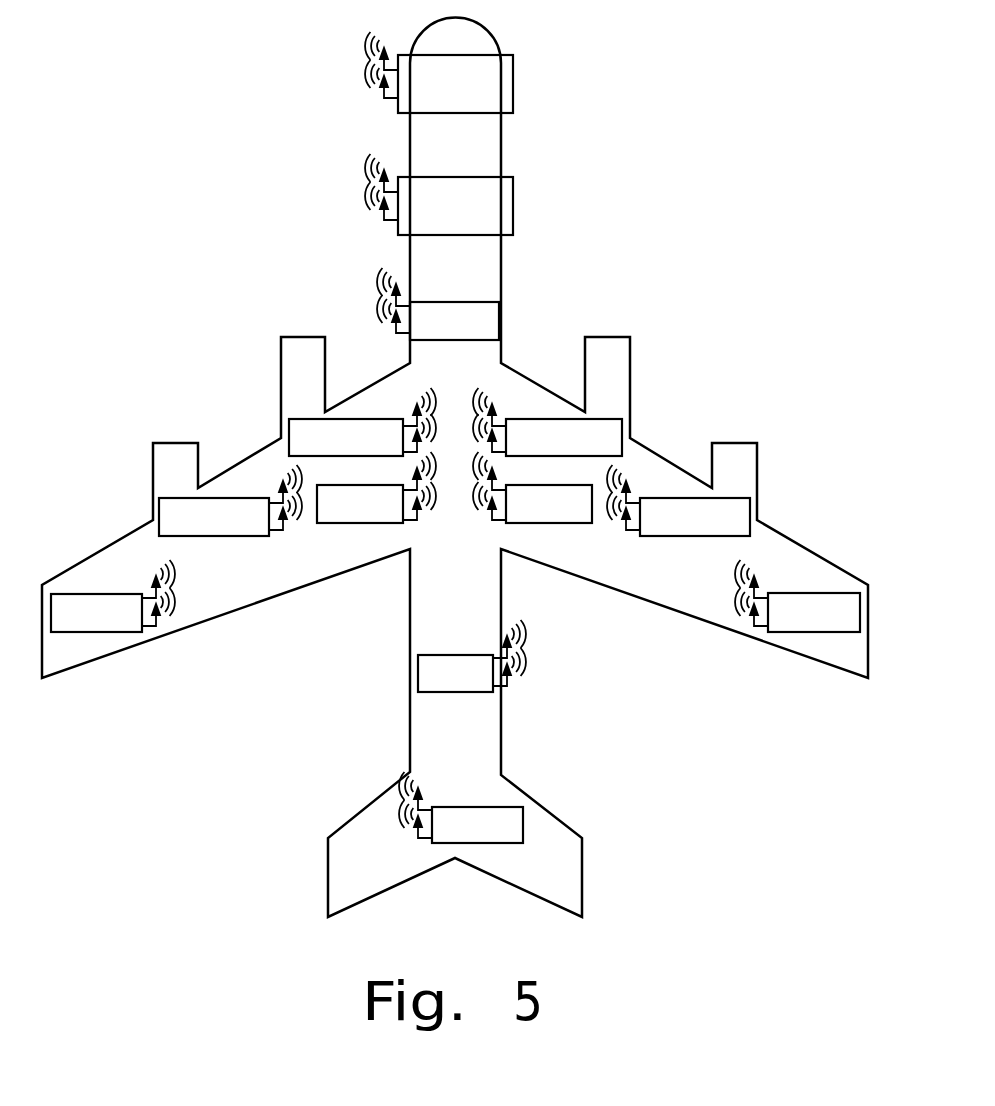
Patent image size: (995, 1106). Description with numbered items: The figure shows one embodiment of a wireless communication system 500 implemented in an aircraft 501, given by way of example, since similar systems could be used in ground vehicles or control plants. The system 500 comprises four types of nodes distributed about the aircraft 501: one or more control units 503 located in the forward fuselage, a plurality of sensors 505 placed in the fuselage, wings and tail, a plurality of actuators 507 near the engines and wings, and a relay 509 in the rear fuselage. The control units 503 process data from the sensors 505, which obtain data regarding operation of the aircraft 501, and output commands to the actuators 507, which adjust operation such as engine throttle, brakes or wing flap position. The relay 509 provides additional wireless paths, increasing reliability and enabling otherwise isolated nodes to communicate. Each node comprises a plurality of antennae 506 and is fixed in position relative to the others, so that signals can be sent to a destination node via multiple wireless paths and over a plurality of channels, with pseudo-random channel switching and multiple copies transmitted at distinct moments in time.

The wireless communication system 500 is at (206, 134).
The aircraft 501 is at (630, 355).
The control unit 503 is at (513, 102).
The sensor 505 is at (380, 523).
The antennae 506 is at (272, 537).
The actuator 507 is at (245, 498).
The relay 509 is at (457, 692).